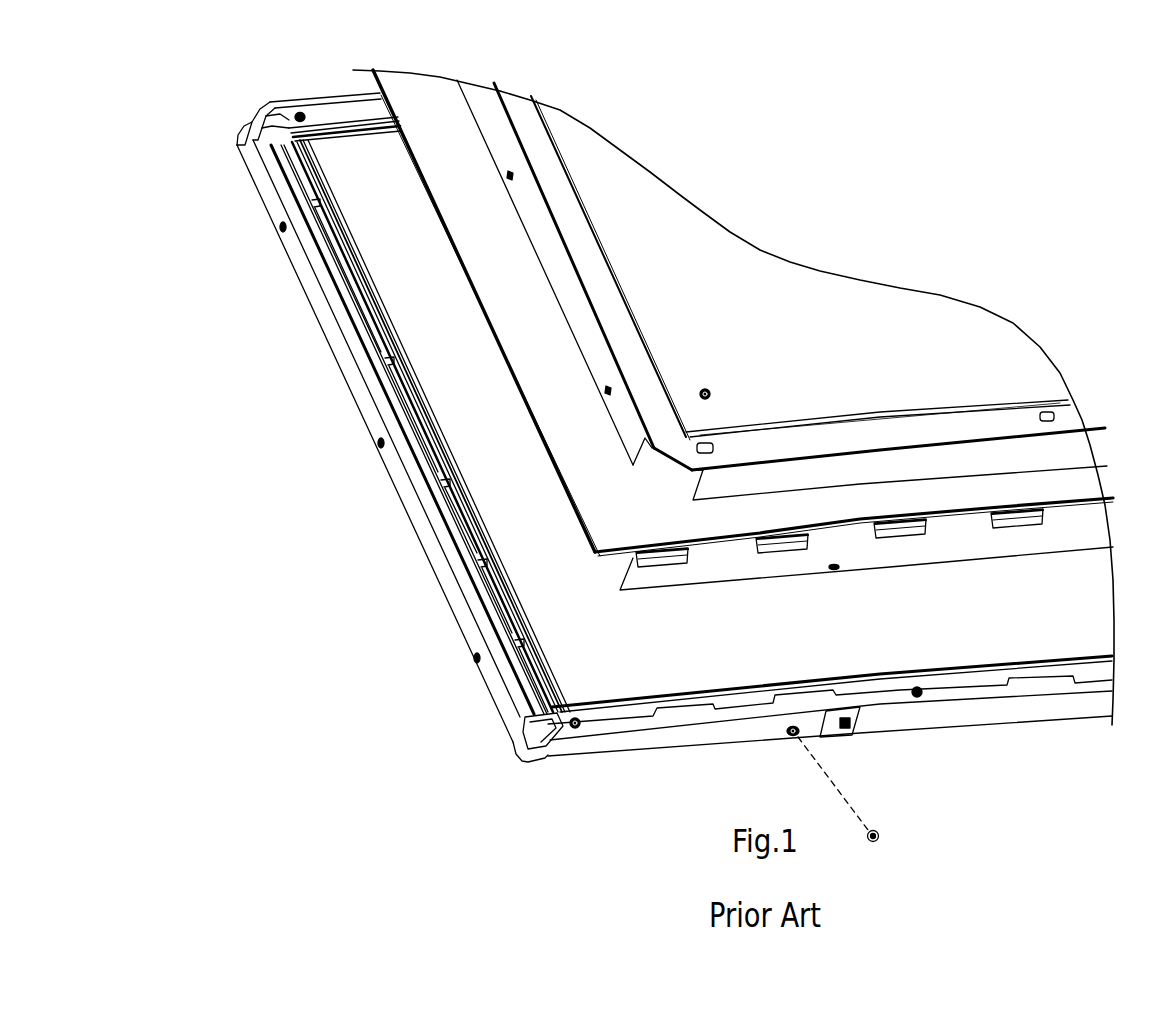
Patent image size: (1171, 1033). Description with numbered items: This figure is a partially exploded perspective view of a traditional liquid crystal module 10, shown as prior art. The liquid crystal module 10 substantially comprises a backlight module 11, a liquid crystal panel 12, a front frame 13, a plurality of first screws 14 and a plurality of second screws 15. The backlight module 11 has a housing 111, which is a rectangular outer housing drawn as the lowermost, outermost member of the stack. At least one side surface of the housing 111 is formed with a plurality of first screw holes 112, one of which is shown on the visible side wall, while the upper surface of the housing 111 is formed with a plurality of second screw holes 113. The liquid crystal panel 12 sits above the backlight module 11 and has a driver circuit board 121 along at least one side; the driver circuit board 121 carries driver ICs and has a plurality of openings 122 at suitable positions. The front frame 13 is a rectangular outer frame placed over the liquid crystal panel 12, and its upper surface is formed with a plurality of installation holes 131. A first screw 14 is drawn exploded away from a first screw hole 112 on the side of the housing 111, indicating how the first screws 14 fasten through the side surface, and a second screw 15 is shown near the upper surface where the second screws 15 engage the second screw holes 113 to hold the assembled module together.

The liquid crystal module 10 is at (208, 108).
The backlight module 11 is at (431, 577).
The housing 111 is at (548, 752).
The first screw holes 112 is at (800, 733).
The second screw holes 113 is at (582, 726).
The liquid crystal panel 12 is at (546, 484).
The driver circuit board 121 is at (774, 573).
The openings 122 is at (836, 571).
The front frame 13 is at (1063, 419).
The installation holes 131 is at (840, 433).
The first screws 14 is at (878, 835).
The second screws 15 is at (705, 391).